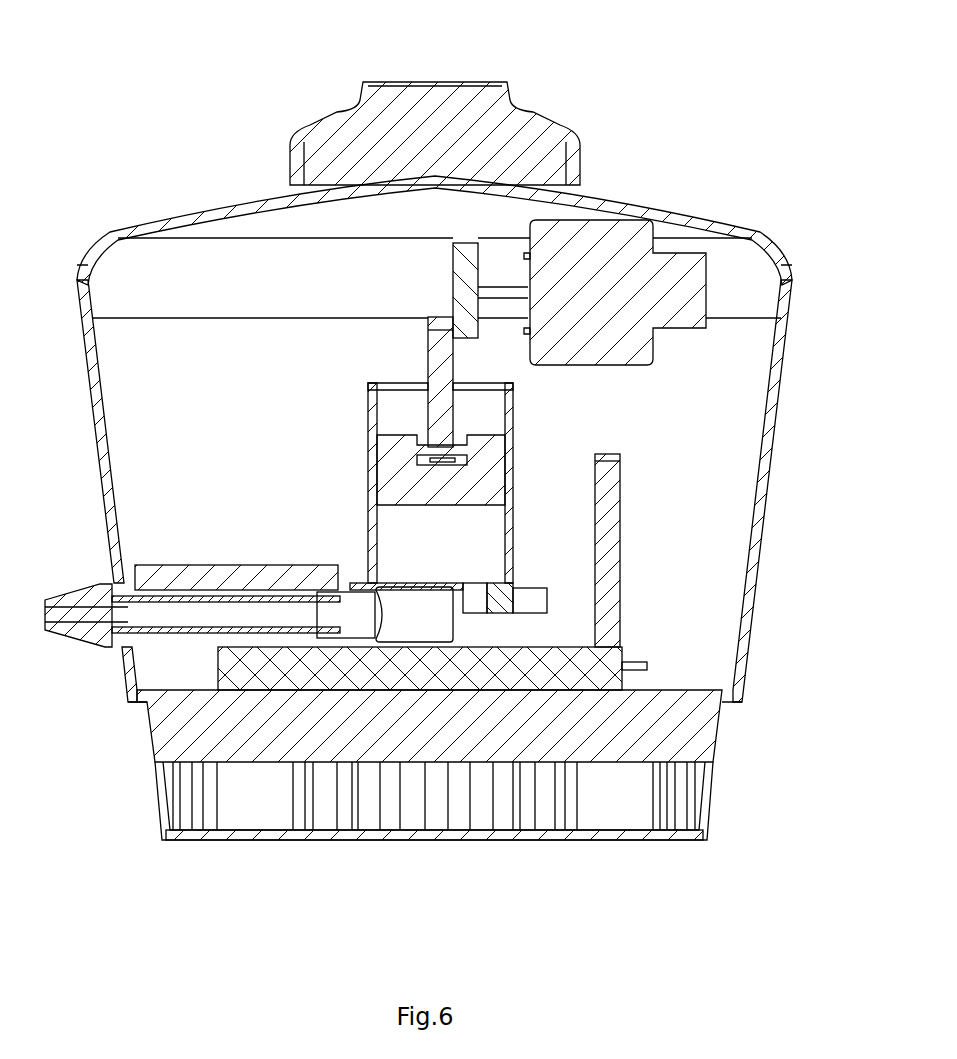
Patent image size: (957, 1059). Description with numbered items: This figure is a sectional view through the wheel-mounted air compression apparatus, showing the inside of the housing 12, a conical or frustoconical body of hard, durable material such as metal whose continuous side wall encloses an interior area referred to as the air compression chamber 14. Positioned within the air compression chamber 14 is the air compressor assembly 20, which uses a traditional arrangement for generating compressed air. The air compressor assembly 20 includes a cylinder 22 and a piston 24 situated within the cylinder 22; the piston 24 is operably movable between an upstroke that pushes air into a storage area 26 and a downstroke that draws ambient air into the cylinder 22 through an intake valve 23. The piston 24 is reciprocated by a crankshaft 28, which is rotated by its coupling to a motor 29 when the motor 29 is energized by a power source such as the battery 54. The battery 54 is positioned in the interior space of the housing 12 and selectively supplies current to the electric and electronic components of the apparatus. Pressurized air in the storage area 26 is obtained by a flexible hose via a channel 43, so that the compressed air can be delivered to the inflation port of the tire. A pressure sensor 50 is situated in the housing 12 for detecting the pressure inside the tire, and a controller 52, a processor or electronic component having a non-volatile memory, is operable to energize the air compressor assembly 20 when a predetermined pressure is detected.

The housing 12 is at (795, 467).
The air compression chamber 14 is at (707, 605).
The air compressor assembly 20 is at (350, 375).
The cylinder 22 is at (368, 527).
The intake valve 23 is at (478, 600).
The piston 24 is at (428, 412).
The storage area 26 is at (398, 625).
The crankshaft 28 is at (453, 260).
The motor 29 is at (615, 237).
The channel 43 is at (153, 612).
The pressure sensor 50 is at (170, 565).
The controller 52 is at (612, 550).
The battery 54 is at (263, 677).